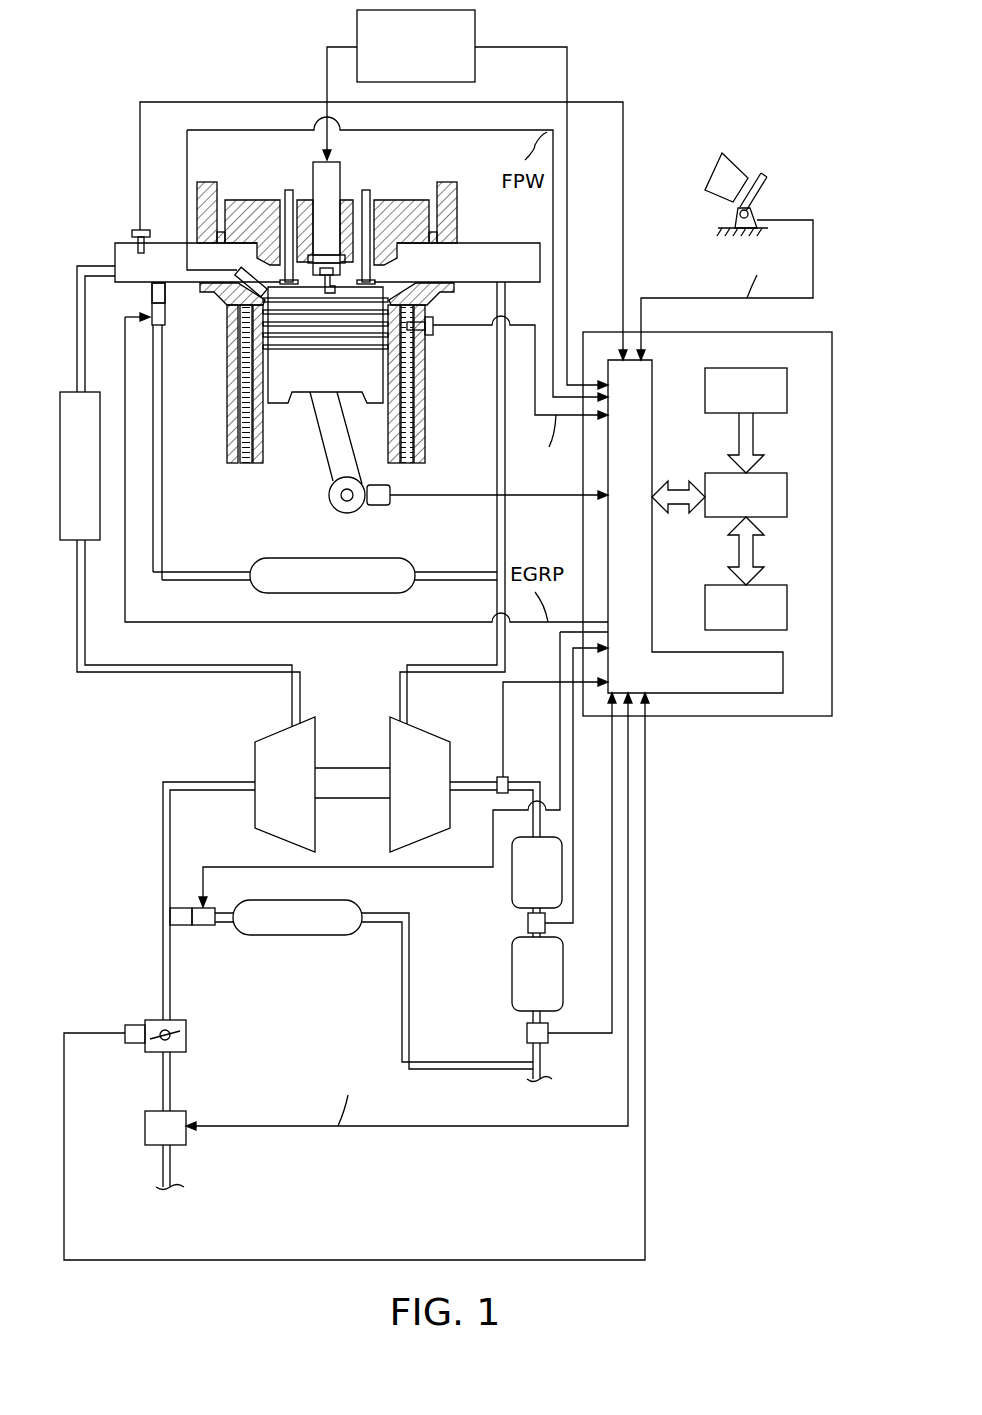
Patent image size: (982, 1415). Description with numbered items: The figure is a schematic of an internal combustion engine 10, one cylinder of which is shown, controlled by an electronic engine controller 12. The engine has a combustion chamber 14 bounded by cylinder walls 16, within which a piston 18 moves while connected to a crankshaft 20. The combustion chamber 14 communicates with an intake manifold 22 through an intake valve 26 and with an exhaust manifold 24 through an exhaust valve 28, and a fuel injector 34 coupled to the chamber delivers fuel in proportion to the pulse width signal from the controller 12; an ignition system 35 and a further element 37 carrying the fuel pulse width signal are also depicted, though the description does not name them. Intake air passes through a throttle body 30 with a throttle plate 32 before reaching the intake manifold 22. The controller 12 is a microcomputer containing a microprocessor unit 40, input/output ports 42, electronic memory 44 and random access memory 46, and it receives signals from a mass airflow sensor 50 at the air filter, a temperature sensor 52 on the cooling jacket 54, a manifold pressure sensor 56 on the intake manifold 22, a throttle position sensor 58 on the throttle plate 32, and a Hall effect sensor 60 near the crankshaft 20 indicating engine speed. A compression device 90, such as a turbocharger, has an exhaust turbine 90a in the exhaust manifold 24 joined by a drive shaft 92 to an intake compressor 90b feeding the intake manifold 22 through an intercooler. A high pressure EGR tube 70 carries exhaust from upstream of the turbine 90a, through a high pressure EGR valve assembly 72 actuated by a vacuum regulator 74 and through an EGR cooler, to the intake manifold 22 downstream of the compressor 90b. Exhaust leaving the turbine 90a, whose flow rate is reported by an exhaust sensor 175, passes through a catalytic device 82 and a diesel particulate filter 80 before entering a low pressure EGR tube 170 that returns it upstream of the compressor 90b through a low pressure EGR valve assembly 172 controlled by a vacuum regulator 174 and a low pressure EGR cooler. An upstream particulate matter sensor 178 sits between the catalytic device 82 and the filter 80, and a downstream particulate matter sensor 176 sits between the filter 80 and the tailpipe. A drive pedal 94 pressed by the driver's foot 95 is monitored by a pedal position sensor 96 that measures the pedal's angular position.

The internal combustion engine 10 is at (234, 484).
The electronic engine controller 12 is at (823, 332).
The combustion chamber 14 is at (298, 292).
The cylinder walls 16 is at (263, 453).
The piston 18 is at (307, 375).
The crankshaft 20 is at (343, 508).
The intake manifold 22 is at (180, 485).
The exhaust manifold 24 is at (457, 483).
The intake valve 26 is at (287, 190).
The exhaust valve 28 is at (370, 190).
The throttle body 30 is at (186, 1025).
The throttle plate 32 is at (152, 1030).
The fuel injector 34 is at (320, 173).
The ignition system 35 is at (475, 27).
The fuel injector 37 is at (245, 269).
The microprocessor unit 40 is at (777, 473).
The input/output ports 42 is at (652, 372).
The electronic memory 44 is at (787, 390).
The random access memory 46 is at (777, 585).
The mass airflow sensor 50 is at (186, 1113).
The temperature sensor 52 is at (433, 327).
The cooling jacket 54 is at (407, 417).
The manifold pressure sensor 56 is at (132, 233).
The throttle position sensor 58 is at (135, 1043).
The Hall effect sensor 60 is at (380, 505).
The high pressure EGR tube 70 is at (193, 572).
The high pressure EGR valve assembly 72 is at (160, 295).
The vacuum regulator 74 is at (152, 310).
The diesel particulate filter 80 is at (537, 978).
The catalytic device 82 is at (537, 875).
The compression device 90 is at (178, 732).
The exhaust turbine 90a is at (465, 784).
The intake compressor 90b is at (239, 868).
The drive shaft 92 is at (343, 768).
The drive pedal 94 is at (767, 183).
The driver's foot 95 is at (722, 178).
The pedal position sensor 96 is at (735, 215).
The low pressure EGR tube 170 is at (402, 981).
The low pressure EGR valve assembly 172 is at (180, 907).
The vacuum regulator 174 is at (198, 930).
The exhaust sensor 175 is at (497, 775).
The downstream particulate matter sensor 176 is at (548, 1037).
The upstream particulate matter sensor 178 is at (528, 927).